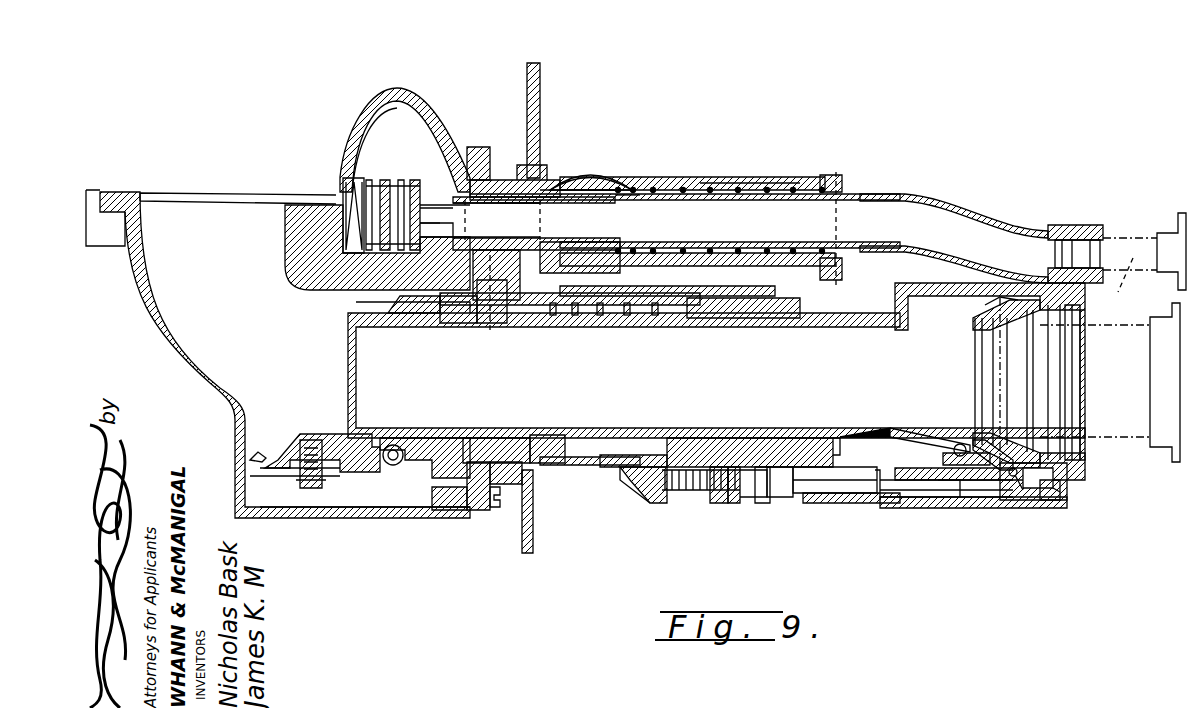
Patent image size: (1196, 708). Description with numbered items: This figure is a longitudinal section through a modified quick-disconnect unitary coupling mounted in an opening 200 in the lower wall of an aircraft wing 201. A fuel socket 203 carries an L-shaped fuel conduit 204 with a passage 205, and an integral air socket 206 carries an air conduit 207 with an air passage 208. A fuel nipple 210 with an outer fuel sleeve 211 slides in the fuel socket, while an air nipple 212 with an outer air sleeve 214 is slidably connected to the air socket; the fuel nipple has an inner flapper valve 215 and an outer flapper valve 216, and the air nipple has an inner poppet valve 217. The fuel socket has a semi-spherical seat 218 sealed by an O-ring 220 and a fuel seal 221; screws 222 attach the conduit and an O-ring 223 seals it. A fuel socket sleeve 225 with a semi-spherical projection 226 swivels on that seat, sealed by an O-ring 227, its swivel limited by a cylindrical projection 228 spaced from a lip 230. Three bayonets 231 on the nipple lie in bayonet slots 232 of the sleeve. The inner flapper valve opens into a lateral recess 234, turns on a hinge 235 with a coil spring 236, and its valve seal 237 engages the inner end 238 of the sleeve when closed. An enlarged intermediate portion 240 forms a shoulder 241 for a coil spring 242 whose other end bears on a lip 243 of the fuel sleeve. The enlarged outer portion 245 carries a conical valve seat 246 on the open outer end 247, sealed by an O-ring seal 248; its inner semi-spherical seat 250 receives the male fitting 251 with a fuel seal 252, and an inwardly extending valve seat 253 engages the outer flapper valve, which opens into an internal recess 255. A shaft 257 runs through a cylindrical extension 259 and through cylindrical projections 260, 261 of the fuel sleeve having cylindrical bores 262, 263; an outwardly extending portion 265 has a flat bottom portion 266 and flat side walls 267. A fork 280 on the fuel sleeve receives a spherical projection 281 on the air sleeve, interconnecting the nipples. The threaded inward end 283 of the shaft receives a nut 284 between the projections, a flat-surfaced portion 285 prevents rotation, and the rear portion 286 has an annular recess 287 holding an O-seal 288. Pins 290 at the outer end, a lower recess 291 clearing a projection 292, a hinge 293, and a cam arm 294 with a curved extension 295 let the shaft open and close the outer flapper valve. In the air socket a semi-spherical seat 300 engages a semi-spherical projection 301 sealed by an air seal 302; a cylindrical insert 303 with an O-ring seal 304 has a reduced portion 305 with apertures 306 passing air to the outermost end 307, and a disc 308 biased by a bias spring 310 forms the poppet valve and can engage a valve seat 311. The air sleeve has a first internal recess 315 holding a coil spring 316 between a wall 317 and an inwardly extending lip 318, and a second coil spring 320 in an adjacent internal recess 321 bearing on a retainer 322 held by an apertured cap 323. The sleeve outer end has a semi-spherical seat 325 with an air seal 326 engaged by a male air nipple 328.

The opening 200 is at (545, 185).
The aircraft wing 201 is at (542, 92).
The fuel socket 203 is at (490, 520).
The fuel conduit 204 is at (165, 350).
The passage 205 is at (188, 210).
The air socket 206 is at (505, 157).
The air conduit 207 is at (380, 92).
The air passage 208 is at (365, 128).
The fuel nipple 210 is at (770, 328).
The fuel sleeve 211 is at (605, 468).
The air nipple 212 is at (905, 195).
The air sleeve 214 is at (705, 177).
The inner flapper valve 215 is at (300, 432).
The outer flapper valve 216 is at (882, 425).
The inner poppet valve 217 is at (345, 182).
The semi-spherical seat 218 is at (545, 460).
The O-ring 220 is at (505, 305).
The fuel seal 221 is at (483, 325).
The screws 222 is at (495, 510).
The O-ring 223 is at (472, 518).
The fuel socket sleeve 225 is at (560, 296).
The semi-spherical projection 226 is at (510, 438).
The O-ring 227 is at (415, 312).
The cylindrical projection 228 is at (448, 450).
The lip 230 is at (440, 505).
The bayonets 231 is at (448, 325).
The bayonet slots 232 is at (492, 332).
The lateral recess 234 is at (335, 503).
The hinge 235 is at (330, 470).
The coil spring 236 is at (398, 446).
The valve seal 237 is at (253, 456).
The inner end 238 is at (390, 306).
The enlarged intermediate portion 240 is at (714, 318).
The shoulder 241 is at (703, 296).
The coil spring 242 is at (630, 313).
The lip 243 is at (562, 305).
The enlarged outer portion 245 is at (938, 298).
The conical valve seat 246 is at (985, 306).
The open outer end 247 is at (1058, 430).
The O-ring seal 248 is at (1075, 505).
The semi-spherical seat 250 is at (1002, 310).
The male fitting 251 is at (1140, 448).
The fuel seal 252 is at (1035, 460).
The valve seat 253 is at (1000, 305).
The internal recess 255 is at (842, 440).
The shaft 257 is at (938, 510).
The cylindrical extension 259 is at (952, 510).
The cylindrical projection 260 is at (655, 495).
The cylindrical projection 261 is at (730, 505).
The cylindrical bore 262 is at (640, 485).
The cylindrical bore 263 is at (712, 505).
The outwardly extending portion 265 is at (768, 505).
The flat bottom portion 266 is at (782, 465).
The flat side walls 267 is at (750, 500).
The fork 280 is at (633, 273).
The spherical projection 281 is at (605, 180).
The inward end 283 is at (690, 460).
The nut 284 is at (682, 500).
The flat-surfaced portion 285 is at (820, 465).
The rear portion 286 is at (832, 505).
The annular recess 287 is at (898, 500).
The O-seal 288 is at (885, 500).
The pins 290 is at (1020, 480).
The lower recess 291 is at (1018, 478).
The projection 292 is at (1065, 485).
The hinge 293 is at (962, 444).
The cam arm 294 is at (985, 470).
The curved extension 295 is at (1005, 500).
The semi-spherical seat 300 is at (543, 175).
The semi-spherical projection 301 is at (542, 203).
The air seal 302 is at (478, 138).
The cylindrical insert 303 is at (540, 230).
The O-ring seal 304 is at (480, 213).
The reduced-diameter portion 305 is at (435, 242).
The apertures 306 is at (436, 210).
The outermost end 307 is at (1085, 252).
The disc 308 is at (400, 178).
The bias spring 310 is at (343, 200).
The valve seat 311 is at (455, 182).
The first internal recess 315 is at (620, 187).
The coil spring 316 is at (618, 198).
The wall 317 is at (655, 188).
The inwardly extending lip 318 is at (600, 178).
The coil spring 320 is at (772, 200).
The internal recess 321 is at (785, 180).
The retainer 322 is at (842, 180).
The apertured cap 323 is at (832, 280).
The semi-spherical seat 325 is at (1085, 225).
The air seal 326 is at (1092, 228).
The male air nipple 328 is at (1117, 284).